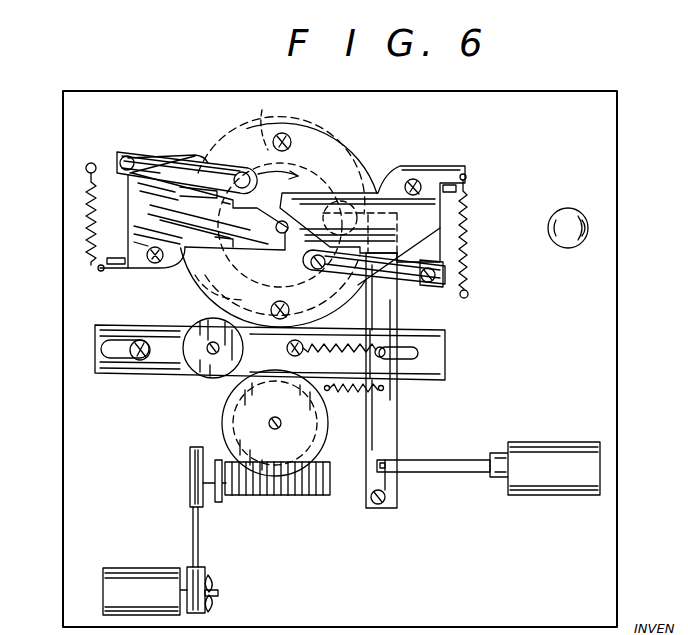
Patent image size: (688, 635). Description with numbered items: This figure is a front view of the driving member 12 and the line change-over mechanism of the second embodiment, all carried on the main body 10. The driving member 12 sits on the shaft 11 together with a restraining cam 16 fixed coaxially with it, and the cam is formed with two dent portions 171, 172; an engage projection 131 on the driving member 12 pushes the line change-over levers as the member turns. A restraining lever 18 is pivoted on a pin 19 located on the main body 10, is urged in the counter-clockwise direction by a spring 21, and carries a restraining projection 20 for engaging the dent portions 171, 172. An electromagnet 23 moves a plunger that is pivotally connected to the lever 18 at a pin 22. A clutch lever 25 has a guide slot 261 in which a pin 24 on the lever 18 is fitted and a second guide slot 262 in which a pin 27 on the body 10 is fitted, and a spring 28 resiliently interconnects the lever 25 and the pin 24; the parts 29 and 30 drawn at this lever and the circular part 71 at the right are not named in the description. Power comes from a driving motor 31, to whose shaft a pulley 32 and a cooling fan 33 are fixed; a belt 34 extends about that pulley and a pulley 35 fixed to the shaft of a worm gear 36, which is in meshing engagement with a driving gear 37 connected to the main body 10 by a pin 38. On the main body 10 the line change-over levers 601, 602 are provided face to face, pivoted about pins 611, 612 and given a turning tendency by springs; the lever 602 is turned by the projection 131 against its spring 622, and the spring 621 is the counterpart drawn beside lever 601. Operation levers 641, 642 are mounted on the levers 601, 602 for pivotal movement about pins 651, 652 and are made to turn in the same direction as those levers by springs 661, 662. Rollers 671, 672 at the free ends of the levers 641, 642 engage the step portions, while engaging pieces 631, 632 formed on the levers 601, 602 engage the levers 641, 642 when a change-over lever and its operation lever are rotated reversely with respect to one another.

The main body 10 is at (604, 120).
The driving member 12 is at (325, 140).
The engage projection 131 is at (291, 141).
The restraining cam 16 is at (274, 123).
The dent portion 171 is at (355, 165).
The dent portion 172 is at (198, 278).
The shaft 11 is at (245, 160).
The line change over lever 602 is at (126, 215).
The pin 612 is at (150, 272).
The spring 662 is at (172, 155).
The pin 652 is at (127, 156).
The operation lever 642 is at (205, 155).
The engaging piece 632 is at (241, 171).
The roller 672 is at (278, 236).
The spring 622 is at (90, 215).
The restraining projection 20 is at (370, 130).
The pin 611 is at (414, 178).
The line change over lever 601 is at (430, 170).
The engaging piece 631 is at (470, 190).
The right spring 621 is at (470, 218).
The roller 671 is at (311, 266).
The spring 661 is at (445, 263).
The pin 651 is at (438, 276).
The operation lever 641 is at (455, 285).
The knob 71 is at (588, 221).
The restraining lever 18 is at (392, 297).
The pin 19 is at (380, 505).
The clutch lever 25 is at (150, 378).
The guide slot 262 is at (112, 355).
The pin 27 is at (141, 340).
The disc 29 is at (195, 375).
The disc hub 30 is at (213, 356).
The spring 28 is at (380, 335).
The guide slot 261 is at (418, 358).
The pin 24 is at (385, 355).
The spring 21 is at (345, 392).
The pin 22 is at (395, 460).
The electromagnet 23 is at (548, 447).
The driving gear 37 is at (318, 440).
The pin 38 is at (287, 424).
The worm gear 36 is at (268, 498).
The pulley 35 is at (189, 462).
The belt 34 is at (192, 528).
The pulley 32 is at (190, 568).
The cooling fan 33 is at (220, 590).
The driving motor 31 is at (112, 568).